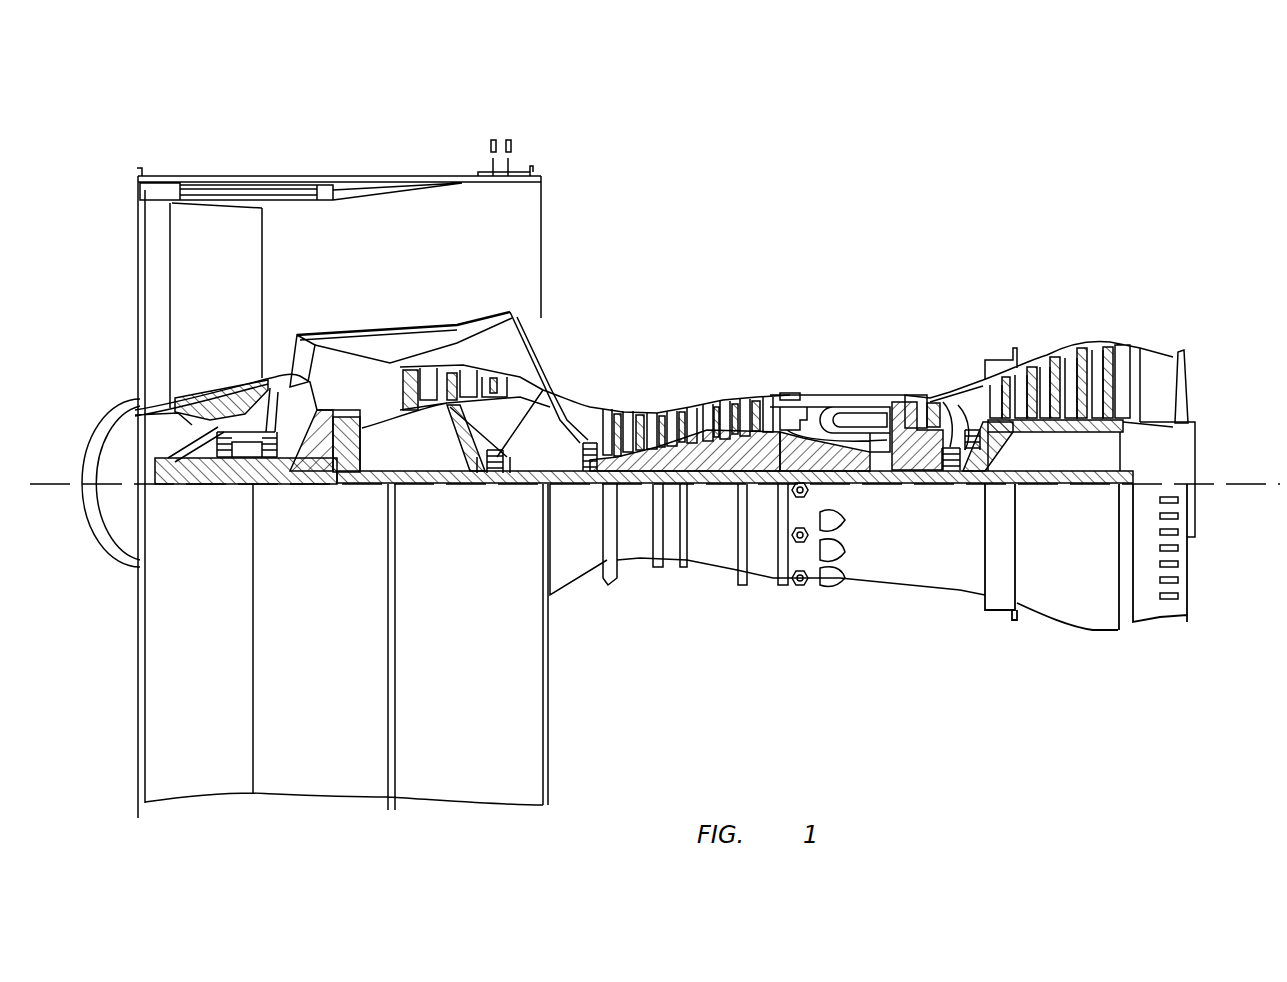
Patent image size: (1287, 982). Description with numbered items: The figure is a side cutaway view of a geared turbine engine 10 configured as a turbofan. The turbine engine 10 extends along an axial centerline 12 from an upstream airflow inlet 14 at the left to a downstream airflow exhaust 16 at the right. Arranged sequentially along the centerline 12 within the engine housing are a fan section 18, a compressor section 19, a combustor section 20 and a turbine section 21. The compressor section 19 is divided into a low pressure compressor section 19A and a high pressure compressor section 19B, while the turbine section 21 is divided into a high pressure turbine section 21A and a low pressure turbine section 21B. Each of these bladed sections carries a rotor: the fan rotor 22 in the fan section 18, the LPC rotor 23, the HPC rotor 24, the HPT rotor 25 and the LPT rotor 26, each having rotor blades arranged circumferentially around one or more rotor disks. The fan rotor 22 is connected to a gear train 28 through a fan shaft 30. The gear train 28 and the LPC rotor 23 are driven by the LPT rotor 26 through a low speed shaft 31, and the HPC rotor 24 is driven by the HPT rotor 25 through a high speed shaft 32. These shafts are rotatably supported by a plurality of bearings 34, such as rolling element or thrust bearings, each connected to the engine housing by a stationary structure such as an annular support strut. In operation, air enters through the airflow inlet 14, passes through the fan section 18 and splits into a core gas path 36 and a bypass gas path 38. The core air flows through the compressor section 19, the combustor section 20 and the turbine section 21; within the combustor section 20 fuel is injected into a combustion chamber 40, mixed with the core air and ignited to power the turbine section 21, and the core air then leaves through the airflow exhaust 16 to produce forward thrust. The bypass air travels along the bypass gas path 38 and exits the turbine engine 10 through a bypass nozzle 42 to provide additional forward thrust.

The geared turbine engine 10 is at (100, 112).
The axial centerline 12 is at (1260, 488).
The airflow inlet 14 is at (138, 250).
The airflow exhaust 16 is at (1192, 383).
The fan section 18 is at (305, 152).
The compressor section 19 is at (762, 83).
The low pressure compressor section 19A is at (378, 135).
The high pressure compressor section 19B is at (570, 323).
The combustor section 20 is at (783, 323).
The turbine section 21 is at (1145, 250).
The high pressure turbine section 21A is at (965, 323).
The low pressure turbine section 21B is at (1145, 323).
The fan rotor 22 is at (142, 407).
The LPC rotor 23 is at (453, 433).
The HPC rotor 24 is at (720, 470).
The HPT rotor 25 is at (920, 475).
The LPT rotor 26 is at (1055, 432).
The gear train 28 is at (345, 487).
The fan shaft 30 is at (180, 487).
The low speed shaft 31 is at (645, 487).
The high speed shaft 32 is at (850, 478).
The bearings 34 is at (262, 465).
The core gas path 36 is at (565, 417).
The bypass gas path 38 is at (392, 263).
The combustion chamber 40 is at (845, 418).
The bypass nozzle 42 is at (548, 235).